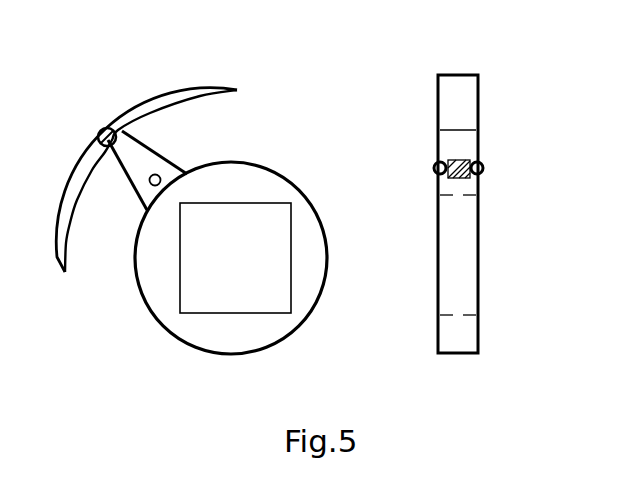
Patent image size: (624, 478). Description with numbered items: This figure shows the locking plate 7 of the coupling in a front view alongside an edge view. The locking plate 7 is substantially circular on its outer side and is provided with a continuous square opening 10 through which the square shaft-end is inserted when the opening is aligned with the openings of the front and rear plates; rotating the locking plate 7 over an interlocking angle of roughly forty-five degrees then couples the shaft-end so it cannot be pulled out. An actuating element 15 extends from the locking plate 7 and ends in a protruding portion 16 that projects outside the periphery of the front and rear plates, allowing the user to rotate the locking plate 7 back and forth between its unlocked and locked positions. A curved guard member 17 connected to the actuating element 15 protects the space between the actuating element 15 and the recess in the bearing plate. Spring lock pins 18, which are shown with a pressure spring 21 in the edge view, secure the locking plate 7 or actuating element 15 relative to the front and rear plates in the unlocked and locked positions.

The locking plate 7 is at (253, 181).
The square opening 10 is at (268, 238).
The actuating element 15 is at (142, 158).
The protruding portion 16 is at (104, 128).
The guard member 17 is at (152, 103).
The spring lock pin 18 is at (148, 193).
The pressure spring 21 is at (458, 162).